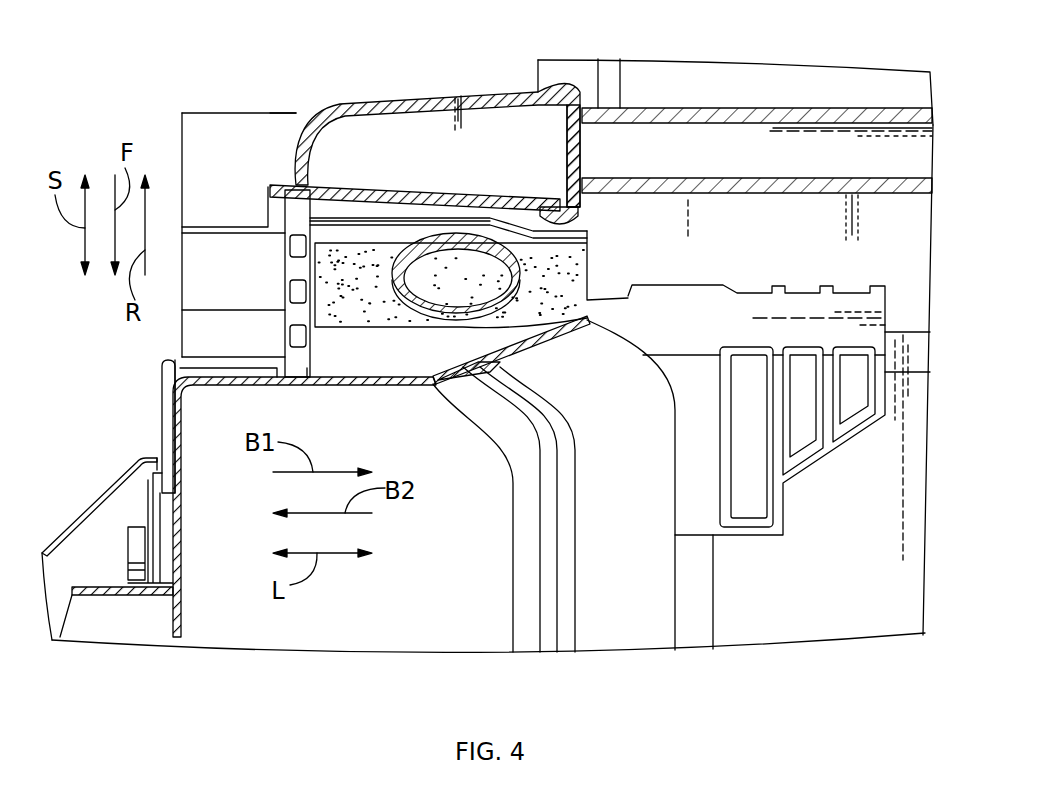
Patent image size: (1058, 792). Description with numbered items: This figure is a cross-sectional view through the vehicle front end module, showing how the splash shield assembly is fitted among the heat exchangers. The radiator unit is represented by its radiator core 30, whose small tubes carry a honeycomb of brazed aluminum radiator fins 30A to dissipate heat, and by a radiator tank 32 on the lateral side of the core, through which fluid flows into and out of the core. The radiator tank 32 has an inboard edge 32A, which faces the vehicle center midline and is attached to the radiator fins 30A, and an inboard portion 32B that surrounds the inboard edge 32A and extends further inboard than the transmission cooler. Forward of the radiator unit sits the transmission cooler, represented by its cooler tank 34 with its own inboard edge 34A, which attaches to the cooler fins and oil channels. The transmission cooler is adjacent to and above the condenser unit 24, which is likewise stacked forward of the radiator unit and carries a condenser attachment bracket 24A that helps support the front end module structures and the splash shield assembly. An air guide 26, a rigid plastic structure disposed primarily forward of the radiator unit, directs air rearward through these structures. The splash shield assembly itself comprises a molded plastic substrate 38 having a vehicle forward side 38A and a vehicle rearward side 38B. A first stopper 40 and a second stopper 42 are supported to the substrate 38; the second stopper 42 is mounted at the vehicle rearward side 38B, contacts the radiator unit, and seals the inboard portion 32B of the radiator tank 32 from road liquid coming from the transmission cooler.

The condenser unit 24 is at (778, 467).
The condenser attachment bracket 24A is at (820, 460).
The air guide 26 is at (180, 607).
The radiator core 30 is at (735, 329).
The radiator fins 30A is at (687, 118).
The radiator tank 32 is at (474, 135).
The inboard edge 32A is at (583, 148).
The inboard portion 32B is at (557, 200).
The cooler tank 34 is at (432, 317).
The inboard edge 34A is at (565, 255).
The substrate 38 is at (374, 303).
The vehicle forward side 38A is at (345, 220).
The vehicle rearward side 38B is at (383, 217).
The first stopper 40 is at (557, 297).
The second stopper 42 is at (580, 221).